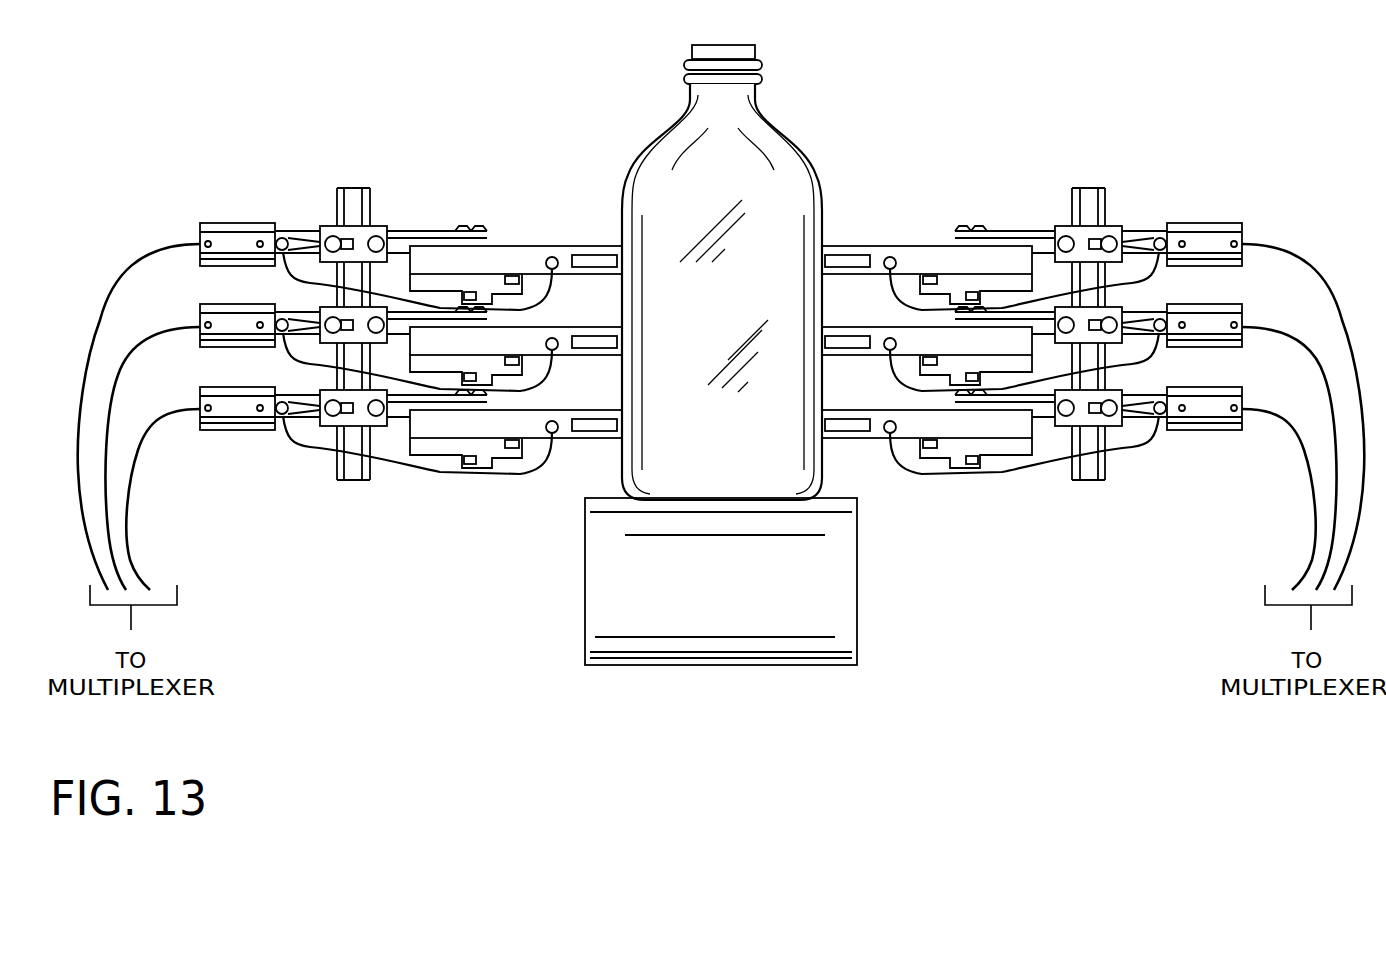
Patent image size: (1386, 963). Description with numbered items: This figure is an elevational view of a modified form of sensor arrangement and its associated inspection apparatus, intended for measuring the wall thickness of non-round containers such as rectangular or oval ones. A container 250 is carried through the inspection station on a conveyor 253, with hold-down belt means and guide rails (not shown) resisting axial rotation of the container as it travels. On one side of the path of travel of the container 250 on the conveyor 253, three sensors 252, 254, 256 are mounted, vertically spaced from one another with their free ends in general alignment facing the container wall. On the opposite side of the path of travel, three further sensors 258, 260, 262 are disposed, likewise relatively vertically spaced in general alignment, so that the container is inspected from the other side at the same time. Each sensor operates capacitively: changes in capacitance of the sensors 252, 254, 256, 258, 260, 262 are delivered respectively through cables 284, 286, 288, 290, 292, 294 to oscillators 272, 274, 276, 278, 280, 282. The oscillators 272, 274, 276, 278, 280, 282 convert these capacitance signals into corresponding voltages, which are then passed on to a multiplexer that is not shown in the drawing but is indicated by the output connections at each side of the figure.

The container 250 is at (810, 122).
The sensor 252 is at (595, 245).
The conveyor 253 is at (620, 572).
The sensor 254 is at (608, 327).
The sensor 256 is at (608, 410).
The sensor 258 is at (833, 247).
The sensor 260 is at (833, 328).
The sensor 262 is at (833, 410).
The oscillator 272 is at (245, 222).
The oscillator 274 is at (215, 304).
The oscillator 276 is at (215, 387).
The oscillator 278 is at (1228, 223).
The oscillator 280 is at (1236, 316).
The oscillator 282 is at (1238, 398).
The cable 284 is at (296, 282).
The cable 286 is at (300, 363).
The cable 288 is at (320, 452).
The cable 290 is at (1158, 262).
The cable 292 is at (1162, 362).
The cable 294 is at (1135, 450).